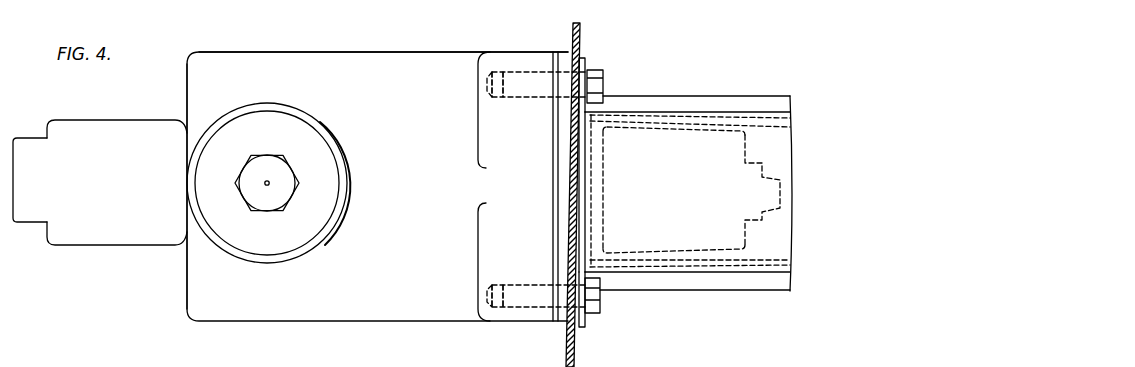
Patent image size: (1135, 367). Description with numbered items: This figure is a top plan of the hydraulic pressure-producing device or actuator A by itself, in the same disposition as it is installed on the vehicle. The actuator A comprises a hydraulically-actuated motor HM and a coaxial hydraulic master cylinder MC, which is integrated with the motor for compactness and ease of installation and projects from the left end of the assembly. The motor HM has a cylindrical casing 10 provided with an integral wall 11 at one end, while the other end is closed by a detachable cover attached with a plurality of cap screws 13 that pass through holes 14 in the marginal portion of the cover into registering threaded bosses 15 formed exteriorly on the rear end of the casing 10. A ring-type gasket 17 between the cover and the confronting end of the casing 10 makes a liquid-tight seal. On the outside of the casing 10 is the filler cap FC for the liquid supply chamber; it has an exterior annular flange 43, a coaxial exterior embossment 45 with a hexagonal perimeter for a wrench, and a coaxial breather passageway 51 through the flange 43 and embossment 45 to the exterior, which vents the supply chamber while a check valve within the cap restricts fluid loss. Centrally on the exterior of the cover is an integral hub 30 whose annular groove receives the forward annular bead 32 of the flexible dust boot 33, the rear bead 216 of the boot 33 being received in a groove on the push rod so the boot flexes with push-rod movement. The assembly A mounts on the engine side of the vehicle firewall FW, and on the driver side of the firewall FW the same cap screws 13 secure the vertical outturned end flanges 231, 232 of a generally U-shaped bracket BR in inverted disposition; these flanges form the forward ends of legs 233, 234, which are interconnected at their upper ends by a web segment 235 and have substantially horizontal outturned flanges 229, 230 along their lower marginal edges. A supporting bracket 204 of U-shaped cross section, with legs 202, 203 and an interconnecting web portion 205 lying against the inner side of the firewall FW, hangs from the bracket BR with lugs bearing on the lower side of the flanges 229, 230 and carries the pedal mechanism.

The cylindrical casing 10 is at (305, 322).
The integral wall 11 is at (186, 279).
The cap screws 13 is at (604, 77).
The holes 14 is at (528, 98).
The threaded bosses 15 is at (520, 66).
The ring-type gasket 17 is at (554, 118).
The hub 30 is at (594, 270).
The forward annular bead 32 is at (590, 261).
The flexible dust boot 33 is at (700, 128).
The exterior annular flange 43 is at (322, 165).
The coaxial exterior embossment 45 is at (283, 190).
The breather passageway 51 is at (268, 190).
The leg 202 is at (719, 266).
The leg 203 is at (748, 128).
The supporting bracket 204 is at (722, 135).
The interconnecting web portion 205 is at (578, 124).
The rear bead 216 is at (750, 163).
The outturned flange 229 is at (683, 286).
The outturned flange 230 is at (675, 101).
The vertical outturned end flange 231 is at (579, 330).
The vertical outturned end flange 232 is at (581, 58).
The leg 233 is at (688, 268).
The leg 234 is at (668, 113).
The web segment 235 is at (588, 160).
The hydraulic pressure-producing device A is at (508, 30).
The bracket BR is at (758, 284).
The filler cap FC is at (286, 144).
The vehicle firewall FW is at (569, 343).
The hydraulically-actuated motor HM is at (352, 49).
The hydraulic master cylinder MC is at (103, 132).